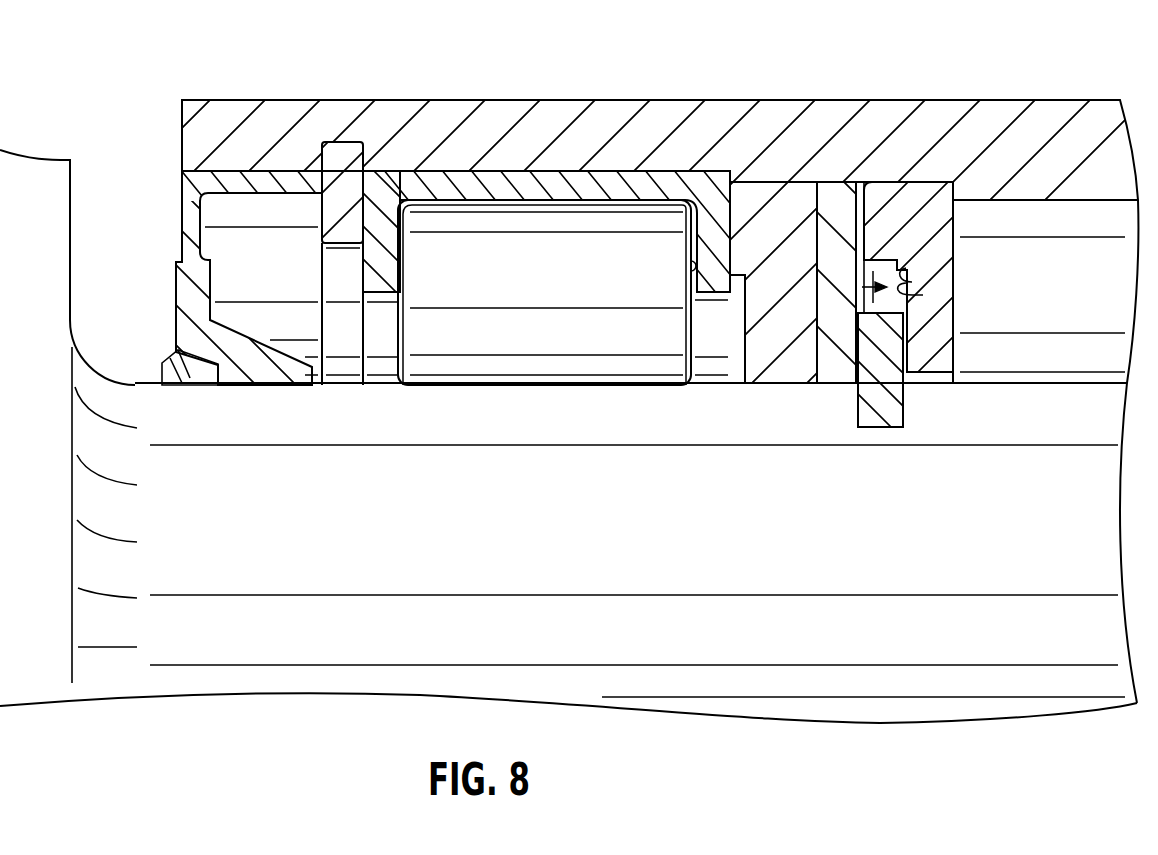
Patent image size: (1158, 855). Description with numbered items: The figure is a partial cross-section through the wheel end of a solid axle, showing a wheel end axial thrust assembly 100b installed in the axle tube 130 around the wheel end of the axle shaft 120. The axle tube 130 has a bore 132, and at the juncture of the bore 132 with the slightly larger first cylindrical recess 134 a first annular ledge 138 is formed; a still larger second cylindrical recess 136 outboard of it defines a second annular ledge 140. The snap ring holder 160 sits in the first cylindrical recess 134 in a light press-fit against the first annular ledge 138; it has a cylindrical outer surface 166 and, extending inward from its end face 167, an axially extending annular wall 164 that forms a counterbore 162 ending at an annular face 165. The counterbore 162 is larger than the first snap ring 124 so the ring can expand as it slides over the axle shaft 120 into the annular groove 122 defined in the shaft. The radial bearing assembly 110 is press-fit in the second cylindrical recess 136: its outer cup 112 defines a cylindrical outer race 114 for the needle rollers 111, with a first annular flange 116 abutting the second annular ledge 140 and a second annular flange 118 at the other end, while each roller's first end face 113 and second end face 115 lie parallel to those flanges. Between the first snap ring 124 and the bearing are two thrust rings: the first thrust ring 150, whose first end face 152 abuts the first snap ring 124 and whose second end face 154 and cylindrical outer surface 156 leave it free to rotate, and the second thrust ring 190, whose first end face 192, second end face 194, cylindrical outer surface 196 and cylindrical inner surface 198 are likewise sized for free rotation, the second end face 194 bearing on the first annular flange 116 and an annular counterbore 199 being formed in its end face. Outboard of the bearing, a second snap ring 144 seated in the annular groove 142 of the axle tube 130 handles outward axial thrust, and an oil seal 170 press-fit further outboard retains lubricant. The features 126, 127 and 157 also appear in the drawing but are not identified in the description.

The wheel end axial thrust assembly 100b is at (417, 505).
The radial bearing assembly 110 is at (568, 426).
The needle rollers 111 is at (530, 284).
The outer cup 112 is at (580, 147).
The first end face 113 is at (700, 275).
The cylindrical outer race 114 is at (468, 203).
The second end face 115 is at (398, 330).
The first annular flange 116 is at (690, 245).
The second annular flange 118 is at (412, 215).
The axle shaft 120 is at (551, 545).
The annular groove 122 is at (897, 418).
The first snap ring 124 is at (890, 388).
The retainer body 126 is at (858, 415).
The groove 127 is at (905, 308).
The axle tube 130 is at (1015, 108).
The bore 132 is at (1068, 203).
The first cylindrical recess 134 is at (955, 187).
The second cylindrical recess 136 is at (523, 173).
The first annular ledge 138 is at (1002, 108).
The second annular ledge 140 is at (728, 188).
The annular groove 142 is at (332, 146).
The second snap ring 144 is at (322, 230).
The first thrust ring 150 is at (840, 345).
The first end face 152 is at (957, 383).
The second end face 154 is at (813, 340).
The cylindrical outer surface 156 is at (859, 265).
The seal edge 157 is at (842, 350).
The snap ring holder 160 is at (972, 241).
The counterbore 162 is at (893, 185).
The axially extending annular wall 164 is at (902, 264).
The annular face 165 is at (921, 286).
The cylindrical outer surface 166 is at (925, 190).
The end face 167 is at (953, 205).
The oil seal 170 is at (182, 245).
The second thrust ring 190 is at (790, 182).
The first end face 192 is at (838, 203).
The second end face 194 is at (733, 217).
The cylindrical outer surface 196 is at (768, 208).
The cylindrical inner surface 198 is at (770, 383).
The annular counterbore 199 is at (728, 336).